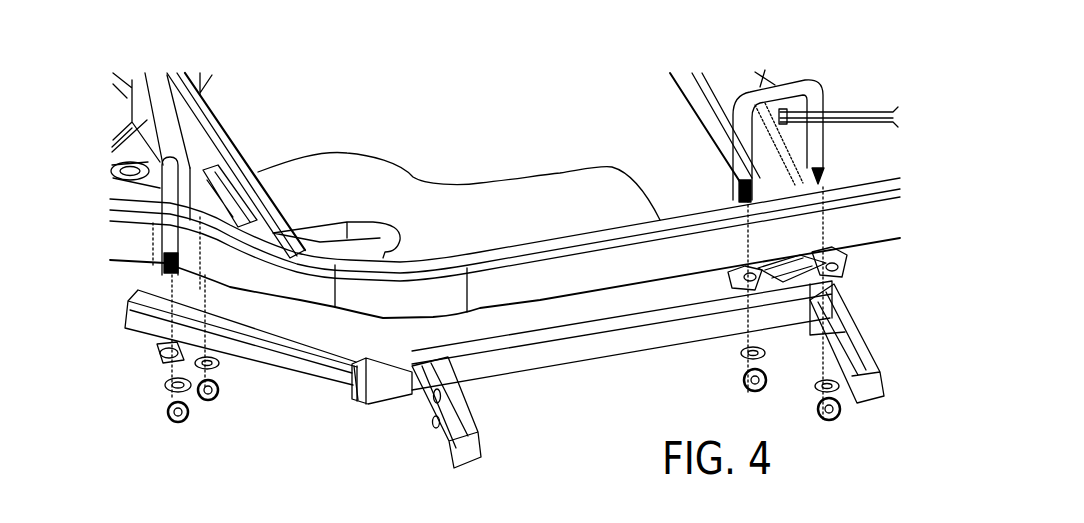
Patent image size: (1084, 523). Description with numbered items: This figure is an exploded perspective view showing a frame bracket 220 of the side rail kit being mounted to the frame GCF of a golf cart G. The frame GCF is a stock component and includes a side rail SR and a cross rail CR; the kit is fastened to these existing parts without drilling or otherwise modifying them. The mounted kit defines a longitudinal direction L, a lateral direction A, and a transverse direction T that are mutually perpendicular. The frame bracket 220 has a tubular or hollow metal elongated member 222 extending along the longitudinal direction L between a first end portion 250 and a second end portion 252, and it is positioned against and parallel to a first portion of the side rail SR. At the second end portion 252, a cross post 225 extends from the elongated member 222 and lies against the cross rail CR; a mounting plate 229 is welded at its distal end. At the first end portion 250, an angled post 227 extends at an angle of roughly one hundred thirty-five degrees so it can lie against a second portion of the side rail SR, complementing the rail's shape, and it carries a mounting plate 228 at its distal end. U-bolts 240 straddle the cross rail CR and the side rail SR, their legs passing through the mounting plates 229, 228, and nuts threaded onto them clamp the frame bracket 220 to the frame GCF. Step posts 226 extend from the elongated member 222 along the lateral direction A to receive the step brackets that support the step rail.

The frame bracket 220 is at (387, 392).
The elongated member 222 is at (637, 343).
The cross post 225 is at (800, 272).
The step post 226 is at (455, 417).
The angled post 227 is at (258, 350).
The mounting plate 228 is at (163, 353).
The mounting plate 229 is at (840, 260).
The U-bolt 240 is at (162, 193).
The first end portion 250 is at (352, 404).
The second end portion 252 is at (806, 342).
The frame GCF is at (125, 243).
The side rail SR is at (530, 273).
The cross rail CR is at (697, 89).
The golf cart G is at (772, 57).
The transverse direction T is at (460, 176).
The lateral direction A is at (497, 166).
The longitudinal direction L is at (385, 113).